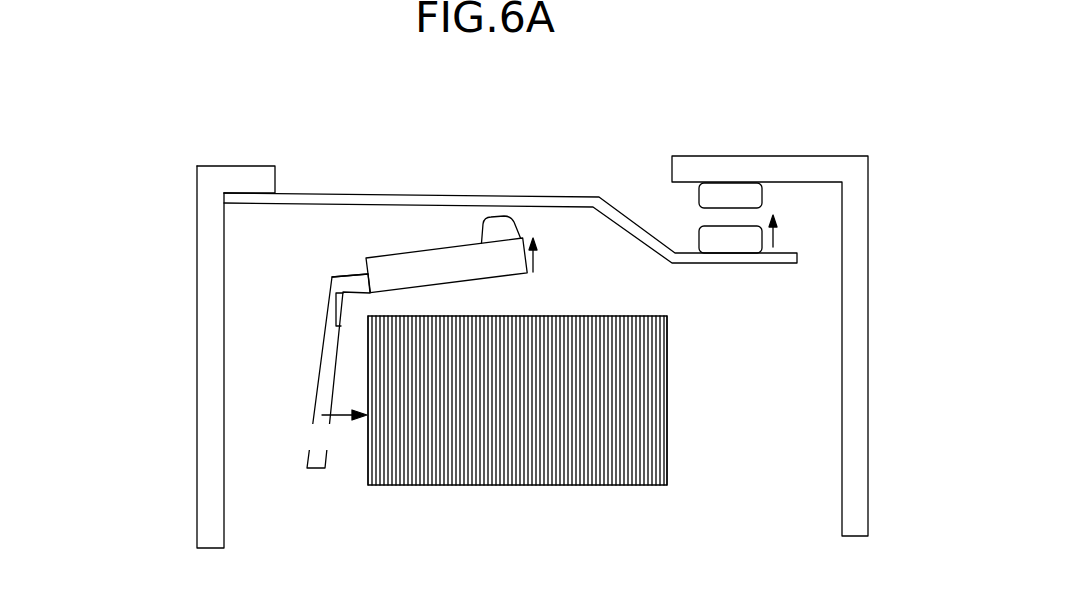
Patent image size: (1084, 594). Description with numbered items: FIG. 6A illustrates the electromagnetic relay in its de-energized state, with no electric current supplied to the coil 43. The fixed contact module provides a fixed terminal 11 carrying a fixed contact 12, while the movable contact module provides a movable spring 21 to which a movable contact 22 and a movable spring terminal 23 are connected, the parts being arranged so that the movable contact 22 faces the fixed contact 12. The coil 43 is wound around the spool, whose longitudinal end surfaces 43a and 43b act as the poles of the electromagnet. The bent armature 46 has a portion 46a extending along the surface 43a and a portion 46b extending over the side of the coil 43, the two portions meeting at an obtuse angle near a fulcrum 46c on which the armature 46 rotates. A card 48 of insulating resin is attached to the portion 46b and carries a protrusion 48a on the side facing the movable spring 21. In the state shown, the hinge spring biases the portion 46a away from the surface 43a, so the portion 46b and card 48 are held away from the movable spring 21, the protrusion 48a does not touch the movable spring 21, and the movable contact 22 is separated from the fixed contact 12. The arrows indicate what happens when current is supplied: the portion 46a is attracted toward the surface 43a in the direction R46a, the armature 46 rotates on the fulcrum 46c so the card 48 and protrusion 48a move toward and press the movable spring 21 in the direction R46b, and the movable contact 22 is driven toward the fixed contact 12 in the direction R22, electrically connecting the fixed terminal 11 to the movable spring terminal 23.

The fixed terminal 11 is at (855, 323).
The fixed contact 12 is at (728, 190).
The movable spring 21 is at (318, 193).
The movable contact 22 is at (730, 243).
The movable spring terminal 23 is at (232, 178).
The coil 43 is at (513, 470).
The surface 43a is at (368, 457).
The surface 43b is at (667, 457).
The armature 46 is at (111, 268).
The portion 46a is at (318, 379).
The portion 46b is at (363, 281).
The fulcrum 46c is at (345, 309).
The card 48 is at (417, 252).
The protrusion 48a is at (493, 227).
The direction R22 is at (799, 231).
The direction R46a is at (331, 430).
The direction R46b is at (566, 255).